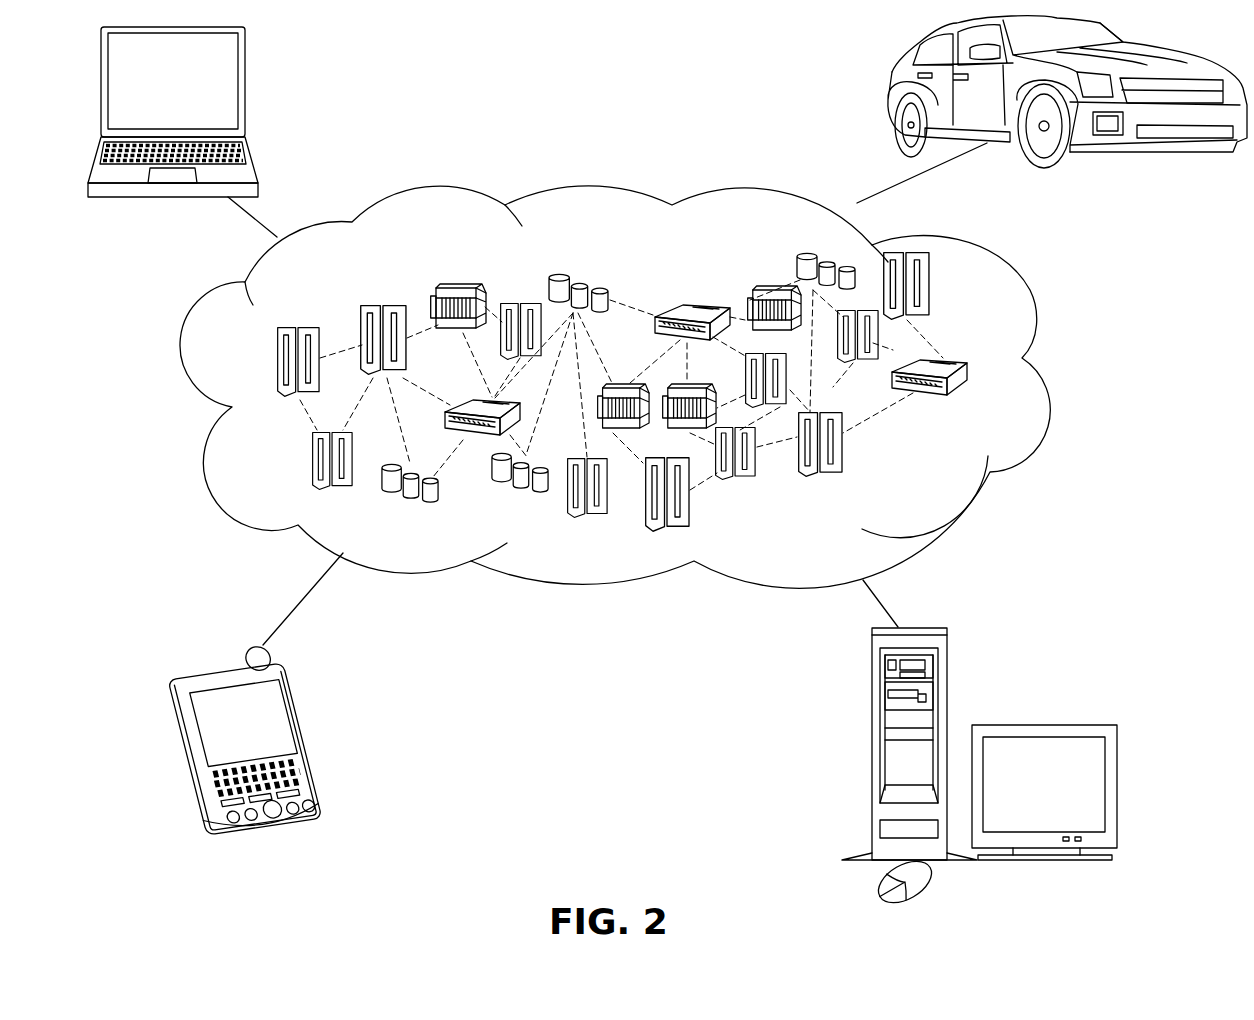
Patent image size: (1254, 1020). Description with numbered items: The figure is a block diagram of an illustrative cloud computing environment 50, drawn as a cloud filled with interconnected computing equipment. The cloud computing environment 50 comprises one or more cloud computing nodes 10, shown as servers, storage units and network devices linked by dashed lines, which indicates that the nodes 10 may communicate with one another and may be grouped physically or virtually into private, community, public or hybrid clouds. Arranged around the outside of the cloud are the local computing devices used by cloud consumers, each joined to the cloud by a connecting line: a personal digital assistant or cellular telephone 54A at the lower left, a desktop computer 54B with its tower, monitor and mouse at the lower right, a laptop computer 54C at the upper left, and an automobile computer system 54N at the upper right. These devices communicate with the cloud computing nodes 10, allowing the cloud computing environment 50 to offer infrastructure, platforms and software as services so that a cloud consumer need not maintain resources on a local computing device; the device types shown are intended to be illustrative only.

The cloud computing environment 50 is at (648, 387).
The cloud computing nodes 10 is at (949, 474).
The personal digital assistant (PDA) or cellular telephone 54A is at (300, 705).
The desktop computer 54B is at (870, 688).
The laptop computer 54C is at (247, 66).
The automobile computer system 54N is at (890, 82).